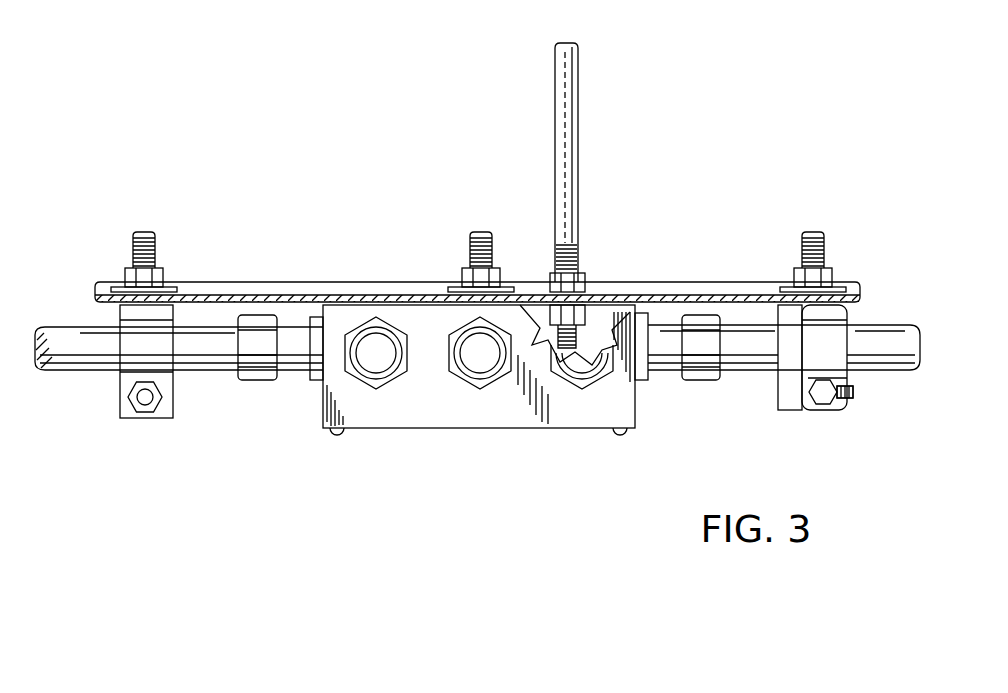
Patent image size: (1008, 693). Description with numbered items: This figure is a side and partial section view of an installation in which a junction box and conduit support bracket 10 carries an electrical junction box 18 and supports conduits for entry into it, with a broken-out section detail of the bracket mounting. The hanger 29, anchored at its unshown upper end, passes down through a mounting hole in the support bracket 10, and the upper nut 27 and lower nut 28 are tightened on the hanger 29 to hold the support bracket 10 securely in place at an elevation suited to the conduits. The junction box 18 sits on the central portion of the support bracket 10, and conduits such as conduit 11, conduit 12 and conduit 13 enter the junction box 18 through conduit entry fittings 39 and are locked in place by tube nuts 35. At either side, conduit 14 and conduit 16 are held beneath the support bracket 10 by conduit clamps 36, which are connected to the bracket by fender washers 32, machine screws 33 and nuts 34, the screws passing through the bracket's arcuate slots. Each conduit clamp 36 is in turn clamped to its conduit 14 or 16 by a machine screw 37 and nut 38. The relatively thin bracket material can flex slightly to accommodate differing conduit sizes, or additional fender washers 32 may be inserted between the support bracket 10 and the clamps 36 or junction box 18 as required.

The junction box and conduit support bracket 10 is at (270, 282).
The conduit 11 is at (612, 372).
The conduit 12 is at (470, 378).
The conduit 13 is at (405, 355).
The conduit 14 is at (205, 375).
The conduit 16 is at (875, 325).
The electrical junction box 18 is at (323, 405).
The upper nut 27 is at (585, 278).
The lower nut 28 is at (540, 305).
The hanger 29 is at (578, 160).
The fender washer 32 is at (170, 287).
The machine screw 33 is at (148, 232).
The nut 34 is at (125, 275).
The tube nut 35 is at (450, 353).
The conduit clamp 36 is at (150, 418).
The machine screw 37 is at (853, 392).
The nut 38 is at (853, 392).
The conduit entry fitting 39 is at (668, 378).